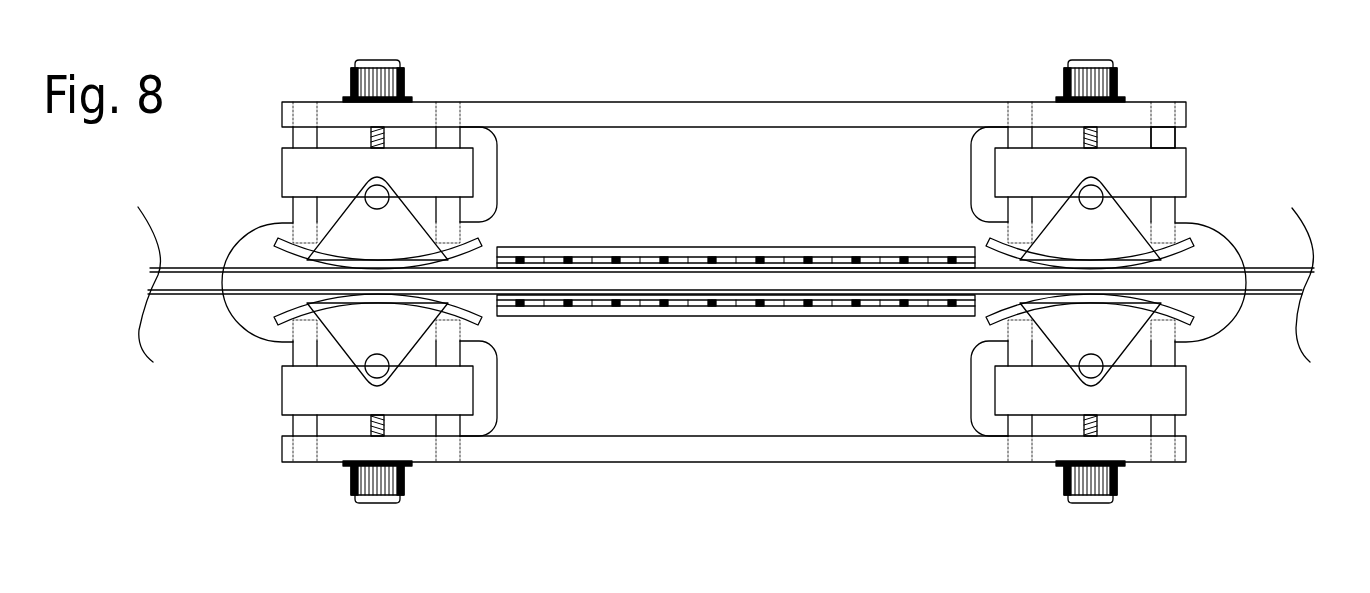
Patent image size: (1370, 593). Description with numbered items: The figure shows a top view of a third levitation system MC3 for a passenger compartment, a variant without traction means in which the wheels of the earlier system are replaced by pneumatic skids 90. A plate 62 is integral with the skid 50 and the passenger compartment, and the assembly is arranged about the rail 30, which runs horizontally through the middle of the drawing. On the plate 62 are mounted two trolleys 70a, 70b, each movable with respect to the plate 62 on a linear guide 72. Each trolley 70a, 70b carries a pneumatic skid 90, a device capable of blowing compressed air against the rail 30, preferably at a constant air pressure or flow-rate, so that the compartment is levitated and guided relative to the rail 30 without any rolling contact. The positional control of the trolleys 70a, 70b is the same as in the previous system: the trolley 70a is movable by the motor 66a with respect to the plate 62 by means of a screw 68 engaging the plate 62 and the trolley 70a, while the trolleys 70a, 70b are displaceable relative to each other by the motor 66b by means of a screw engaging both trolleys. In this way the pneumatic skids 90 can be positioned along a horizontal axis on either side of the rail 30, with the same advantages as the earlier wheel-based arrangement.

The rail 30 is at (212, 266).
The skid 50 is at (683, 243).
The plate 62 is at (753, 100).
The motor 66a is at (403, 73).
The motor 66b is at (377, 500).
The screw 68 is at (1085, 128).
The linear guide 72 is at (1167, 140).
The trolley 70a is at (297, 182).
The trolley 70b is at (298, 387).
The pneumatic skid 90 is at (430, 250).
The system MC3 is at (833, 473).